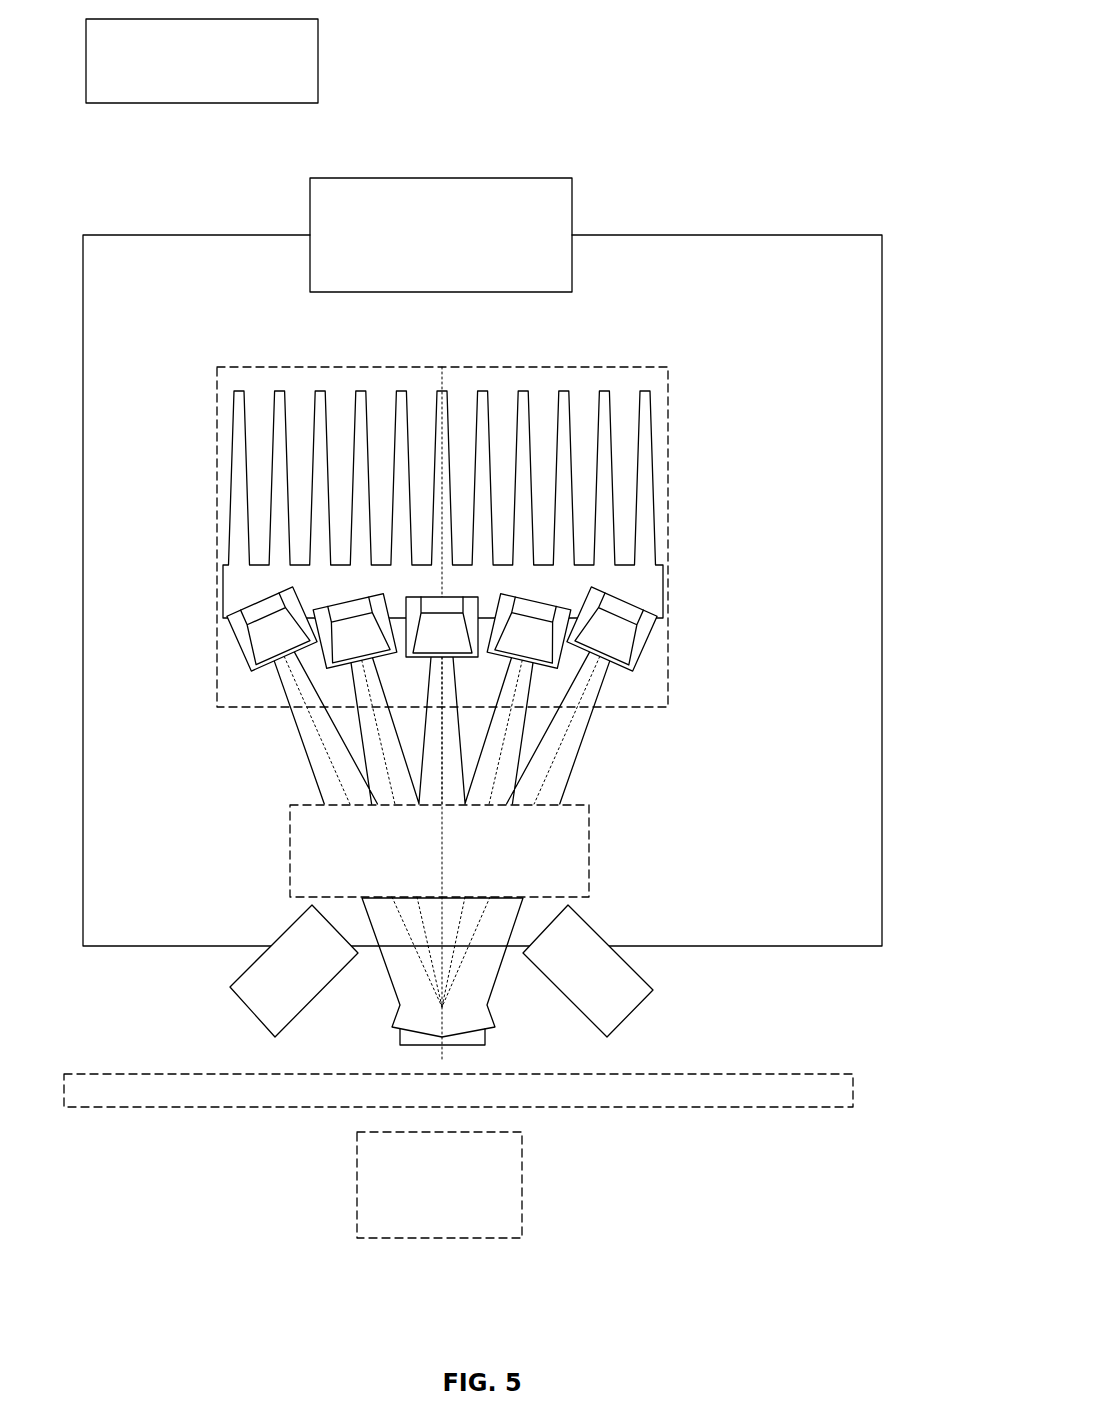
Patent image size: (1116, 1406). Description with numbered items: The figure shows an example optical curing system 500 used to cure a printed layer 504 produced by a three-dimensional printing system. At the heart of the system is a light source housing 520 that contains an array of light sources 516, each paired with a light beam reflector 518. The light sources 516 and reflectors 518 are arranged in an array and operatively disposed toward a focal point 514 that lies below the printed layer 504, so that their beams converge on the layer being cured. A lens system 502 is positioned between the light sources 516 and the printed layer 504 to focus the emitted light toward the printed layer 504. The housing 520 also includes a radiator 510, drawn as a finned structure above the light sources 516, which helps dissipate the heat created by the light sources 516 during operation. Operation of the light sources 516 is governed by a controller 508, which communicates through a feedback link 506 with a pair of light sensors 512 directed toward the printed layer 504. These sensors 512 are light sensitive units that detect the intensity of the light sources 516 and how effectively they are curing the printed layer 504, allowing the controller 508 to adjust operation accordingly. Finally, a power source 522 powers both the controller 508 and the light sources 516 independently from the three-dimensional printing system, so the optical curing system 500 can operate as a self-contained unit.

The optical curing system 500 is at (887, 97).
The lens system 502 is at (522, 858).
The printed layer 504 is at (546, 1105).
The feedback link 506 is at (797, 202).
The controller 508 is at (523, 250).
The radiator 510 is at (695, 395).
The light sensors 512 is at (277, 933).
The focal point 514 is at (422, 1217).
The light source 516 is at (257, 597).
The light beam reflector 518 is at (233, 643).
The light source housing 520 is at (217, 437).
The power source 522 is at (298, 77).